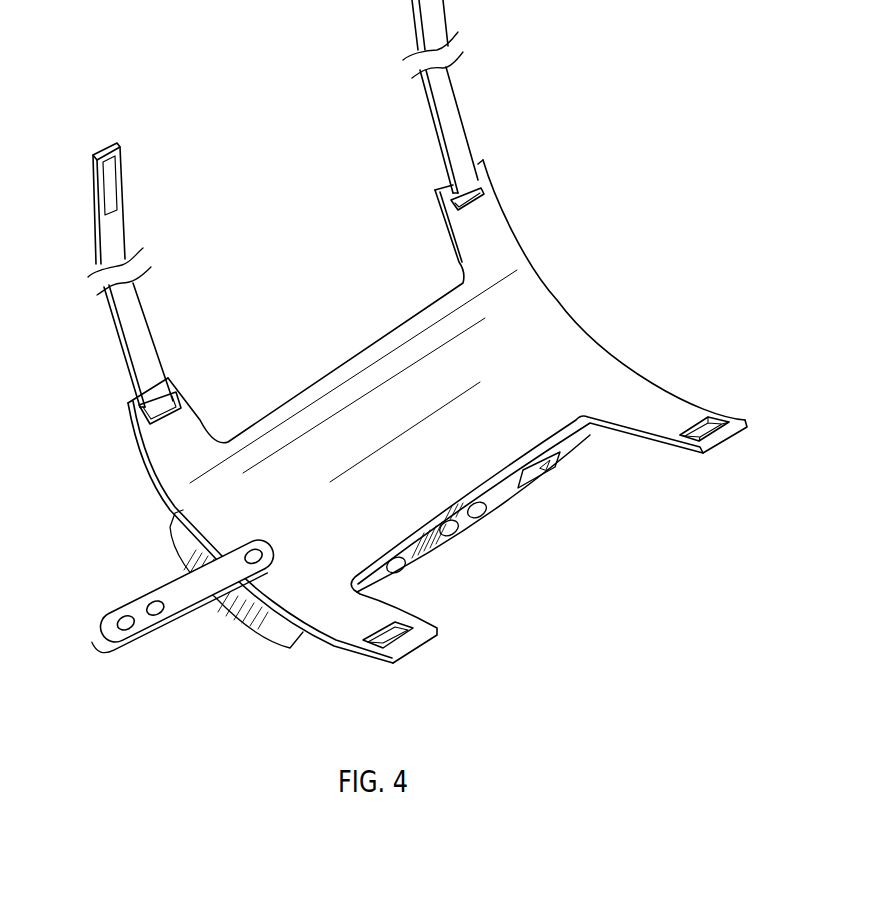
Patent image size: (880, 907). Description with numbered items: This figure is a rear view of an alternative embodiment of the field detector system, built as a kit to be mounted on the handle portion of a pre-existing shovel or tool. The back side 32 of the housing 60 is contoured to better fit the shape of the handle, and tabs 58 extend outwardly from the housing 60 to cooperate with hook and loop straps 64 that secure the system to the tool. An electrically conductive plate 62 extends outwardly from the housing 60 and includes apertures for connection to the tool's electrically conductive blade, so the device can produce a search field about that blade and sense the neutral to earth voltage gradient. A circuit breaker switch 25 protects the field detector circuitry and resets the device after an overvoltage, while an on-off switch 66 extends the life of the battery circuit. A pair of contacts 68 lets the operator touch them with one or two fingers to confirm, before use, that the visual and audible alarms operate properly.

The circuit breaker switch 25 is at (399, 572).
The back side 32 is at (560, 318).
The tabs 58 is at (343, 651).
The housing 60 is at (574, 444).
The electrically conductive plate 62 is at (188, 608).
The hook and loop straps 64 is at (435, 125).
The on-off switch 66 is at (550, 463).
The pair of contacts 68 is at (453, 535).